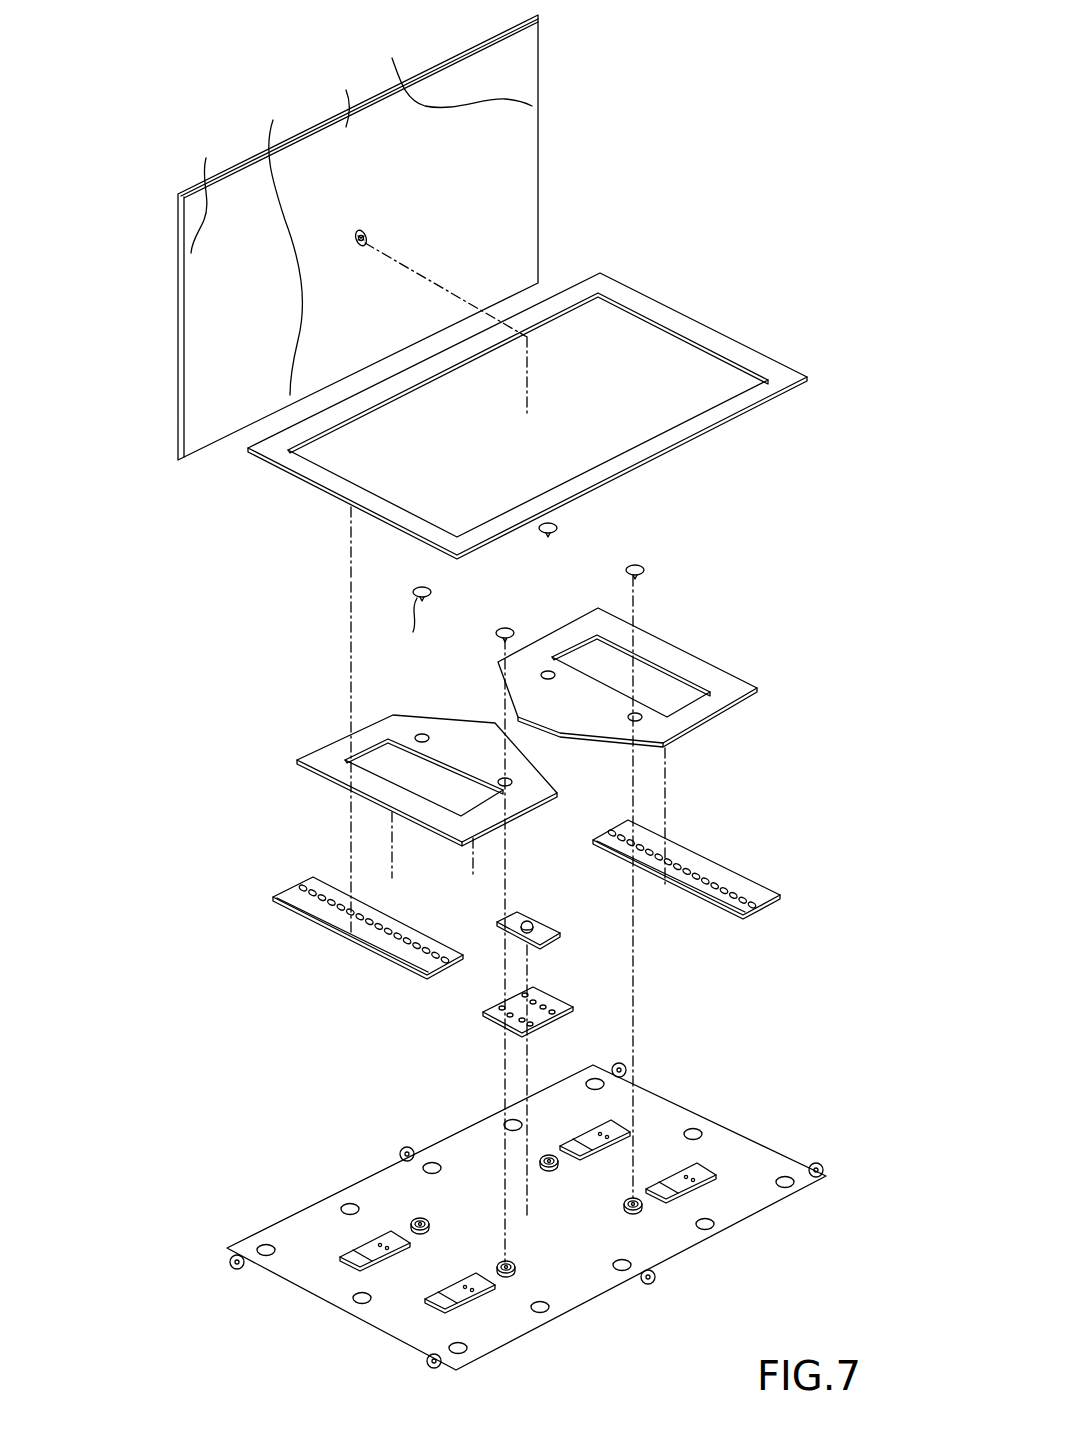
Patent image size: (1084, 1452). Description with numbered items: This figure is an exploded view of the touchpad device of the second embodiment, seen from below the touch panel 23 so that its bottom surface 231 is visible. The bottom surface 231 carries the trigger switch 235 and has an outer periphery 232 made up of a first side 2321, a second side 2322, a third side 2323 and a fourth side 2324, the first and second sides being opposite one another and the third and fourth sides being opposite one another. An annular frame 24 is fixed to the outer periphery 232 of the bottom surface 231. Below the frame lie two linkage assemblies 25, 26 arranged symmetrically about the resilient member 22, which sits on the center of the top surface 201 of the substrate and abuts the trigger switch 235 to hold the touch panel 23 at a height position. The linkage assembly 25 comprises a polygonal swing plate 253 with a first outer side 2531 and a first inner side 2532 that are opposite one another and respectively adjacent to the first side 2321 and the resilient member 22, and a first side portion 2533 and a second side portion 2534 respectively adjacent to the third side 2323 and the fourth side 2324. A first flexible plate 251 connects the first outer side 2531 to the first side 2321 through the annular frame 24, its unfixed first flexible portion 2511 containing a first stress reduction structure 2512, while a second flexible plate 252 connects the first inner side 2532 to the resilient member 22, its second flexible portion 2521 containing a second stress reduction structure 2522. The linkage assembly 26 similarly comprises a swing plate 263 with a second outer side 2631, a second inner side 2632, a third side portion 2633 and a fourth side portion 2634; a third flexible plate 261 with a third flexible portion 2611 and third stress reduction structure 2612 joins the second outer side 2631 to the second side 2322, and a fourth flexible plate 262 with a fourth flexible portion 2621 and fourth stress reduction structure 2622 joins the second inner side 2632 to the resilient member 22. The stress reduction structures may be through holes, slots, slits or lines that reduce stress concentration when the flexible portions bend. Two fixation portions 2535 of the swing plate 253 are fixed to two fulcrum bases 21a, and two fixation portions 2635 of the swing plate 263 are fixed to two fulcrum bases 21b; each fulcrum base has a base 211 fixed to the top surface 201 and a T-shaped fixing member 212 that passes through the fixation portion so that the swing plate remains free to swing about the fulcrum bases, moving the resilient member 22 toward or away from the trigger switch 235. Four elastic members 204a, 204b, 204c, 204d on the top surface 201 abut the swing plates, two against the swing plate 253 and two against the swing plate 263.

The touch panel 23 is at (370, 237).
The bottom surface 231 is at (500, 161).
The outer periphery 232 is at (408, 23).
The first side 2321 is at (204, 194).
The second side 2322 is at (450, 74).
The third side 2323 is at (344, 96).
The fourth side 2324 is at (275, 246).
The trigger switch 235 is at (366, 237).
The annular frame 24 is at (788, 345).
The fulcrum base 21a is at (498, 632).
The fulcrum base 21b is at (557, 527).
The T-shaped fixing member 212 is at (438, 654).
The base 211 is at (438, 1098).
The linkage assembly 26 is at (657, 754).
The swing plate 263 is at (627, 682).
The second outer side 2631 is at (670, 648).
The second inner side 2632 is at (590, 723).
The third side portion 2633 is at (705, 710).
The fourth side portion 2634 is at (577, 625).
The fixation portion 2635 is at (632, 713).
The third flexible plate 261 is at (686, 844).
The third flexible portion 2611 is at (743, 890).
The third stress reduction structure 2612 is at (715, 882).
The linkage assembly 25 is at (503, 822).
The swing plate 253 is at (429, 793).
The first outer side 2531 is at (330, 773).
The first inner side 2532 is at (467, 730).
The first side portion 2533 is at (533, 800).
The second side portion 2534 is at (330, 747).
The fixation portion 2535 is at (503, 785).
The first flexible plate 251 is at (366, 792).
The first flexible portion 2511 is at (287, 905).
The first stress reduction structure 2512 is at (348, 913).
The second flexible plate 252 is at (578, 1016).
The fourth flexible plate 262 is at (578, 1016).
The second flexible portion 2521 is at (500, 1012).
The second stress reduction structure 2522 is at (500, 998).
The fourth flexible portion 2621 is at (547, 1007).
The fourth stress reduction structure 2622 is at (552, 1040).
The resilient member 22 is at (523, 918).
The top surface 201 is at (526, 1216).
The elastic member 204a is at (472, 1276).
The elastic member 204b is at (350, 1253).
The elastic member 204c is at (713, 1173).
The elastic member 204d is at (590, 1152).